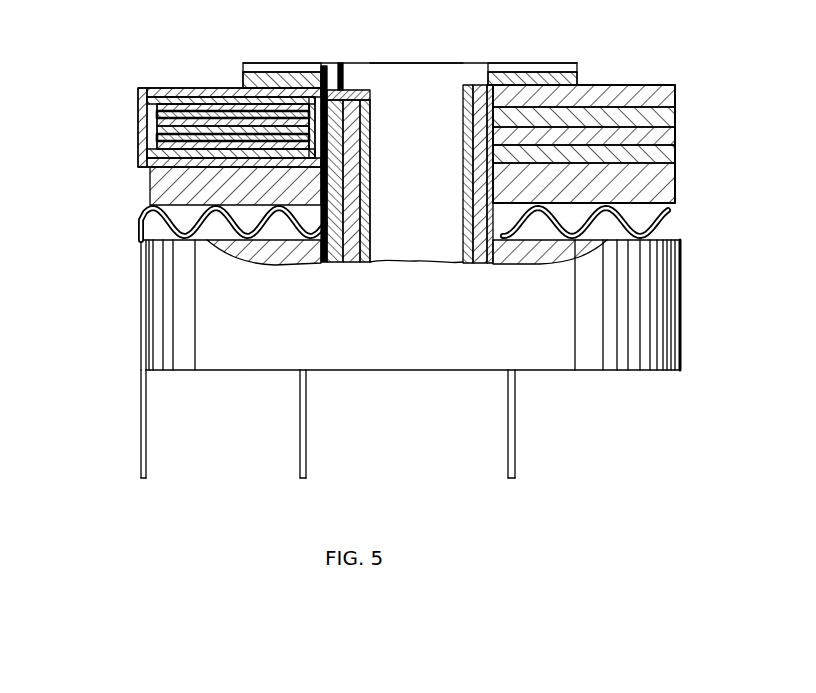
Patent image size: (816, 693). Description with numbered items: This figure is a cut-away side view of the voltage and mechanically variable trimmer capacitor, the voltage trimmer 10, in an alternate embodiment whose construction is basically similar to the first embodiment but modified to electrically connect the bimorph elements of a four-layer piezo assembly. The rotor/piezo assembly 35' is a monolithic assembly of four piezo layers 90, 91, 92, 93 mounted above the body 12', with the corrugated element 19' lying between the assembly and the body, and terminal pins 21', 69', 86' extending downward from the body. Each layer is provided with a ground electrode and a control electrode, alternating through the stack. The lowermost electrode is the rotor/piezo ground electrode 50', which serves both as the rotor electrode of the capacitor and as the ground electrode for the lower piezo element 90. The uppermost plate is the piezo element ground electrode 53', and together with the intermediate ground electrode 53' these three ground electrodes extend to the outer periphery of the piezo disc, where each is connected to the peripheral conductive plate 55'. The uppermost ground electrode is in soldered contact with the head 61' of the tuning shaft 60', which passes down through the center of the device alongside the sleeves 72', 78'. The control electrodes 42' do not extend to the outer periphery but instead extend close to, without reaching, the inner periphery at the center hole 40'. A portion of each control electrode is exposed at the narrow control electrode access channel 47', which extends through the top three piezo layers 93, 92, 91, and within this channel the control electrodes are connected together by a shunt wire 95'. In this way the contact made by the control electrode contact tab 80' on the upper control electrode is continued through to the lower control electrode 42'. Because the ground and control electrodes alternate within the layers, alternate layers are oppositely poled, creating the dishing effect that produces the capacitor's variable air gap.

The voltage trimmer 10 is at (557, 43).
The header / cylindrical body 12' is at (410, 305).
The corrugated spring / bellows 19' is at (361, 222).
The terminal pin 21' is at (117, 424).
The rotor/piezo assembly 35' is at (618, 126).
The center hole 40' is at (375, 66).
The lower control electrode 42' is at (189, 134).
The control electrode access channel 47' is at (336, 140).
The rotor/piezo ground electrode 50' is at (191, 182).
The ground electrode 53' is at (168, 117).
The peripheral conductive plate 55' is at (188, 127).
The tuning shaft 60' is at (399, 130).
The head of the tuning shaft 61' is at (520, 146).
The terminal pin 69' is at (271, 424).
The inner sleeve 72' is at (378, 181).
The tube liner 78' is at (385, 181).
The control electrode contact tab 80' is at (355, 147).
The terminal pin 86' is at (491, 424).
The lower piezo element 90 is at (690, 167).
The piezo layer 91 is at (676, 150).
The piezo layer 92 is at (676, 107).
The piezo layer 93 is at (612, 85).
The shunt wire 95' is at (388, 181).